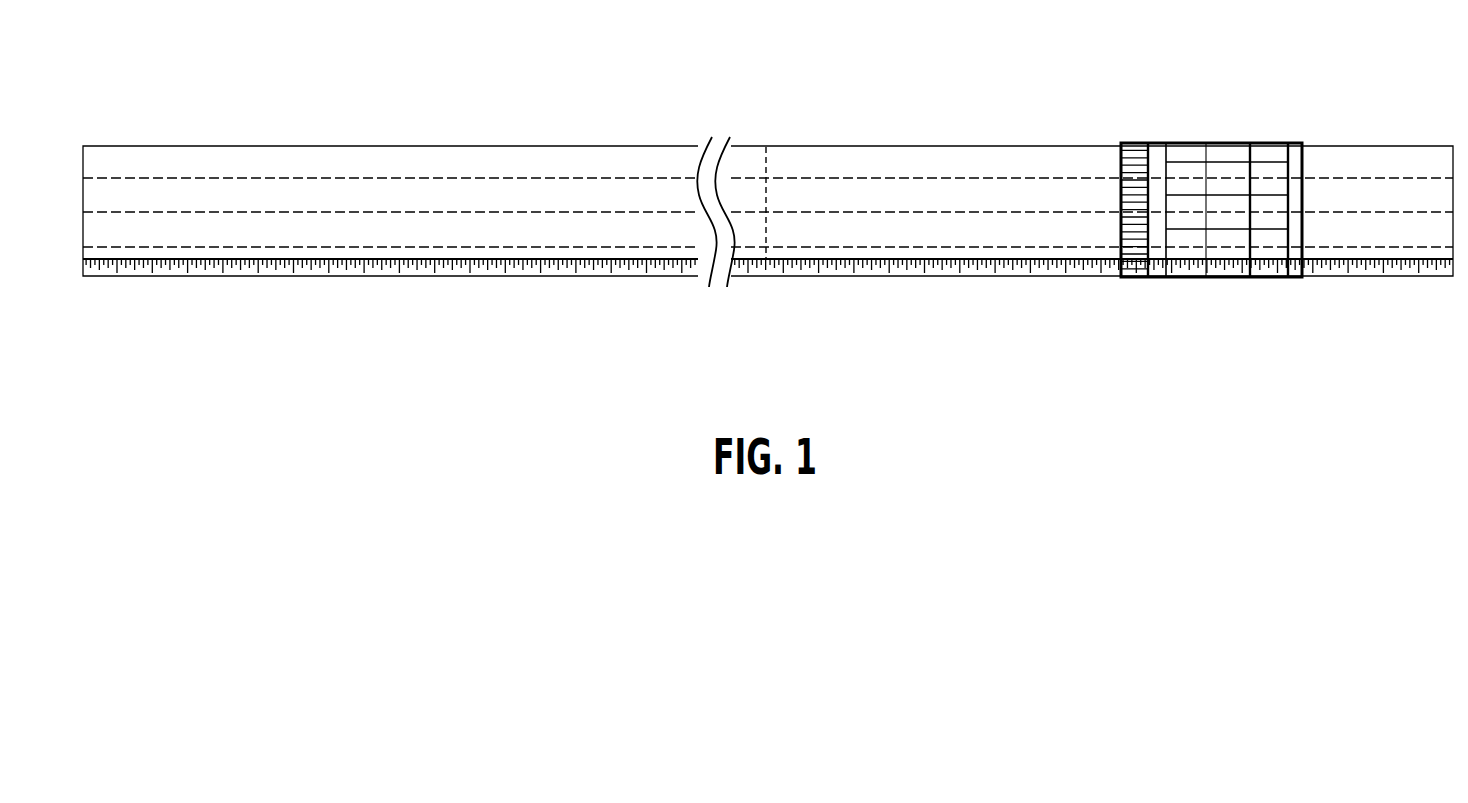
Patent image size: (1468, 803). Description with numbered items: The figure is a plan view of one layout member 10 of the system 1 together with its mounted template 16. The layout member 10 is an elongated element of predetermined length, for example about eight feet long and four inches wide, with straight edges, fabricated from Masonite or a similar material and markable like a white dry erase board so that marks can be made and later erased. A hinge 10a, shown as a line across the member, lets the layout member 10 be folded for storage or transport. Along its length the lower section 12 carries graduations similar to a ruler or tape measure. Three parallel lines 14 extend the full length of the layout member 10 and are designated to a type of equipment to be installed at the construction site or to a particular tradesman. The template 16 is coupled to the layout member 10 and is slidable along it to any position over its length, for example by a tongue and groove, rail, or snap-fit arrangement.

The system 1 is at (1074, 66).
The layout member 10 is at (360, 141).
The hinge 10a is at (767, 158).
The lower section 12 is at (126, 275).
The parallel lines 14 is at (802, 175).
The template 16 is at (1252, 133).